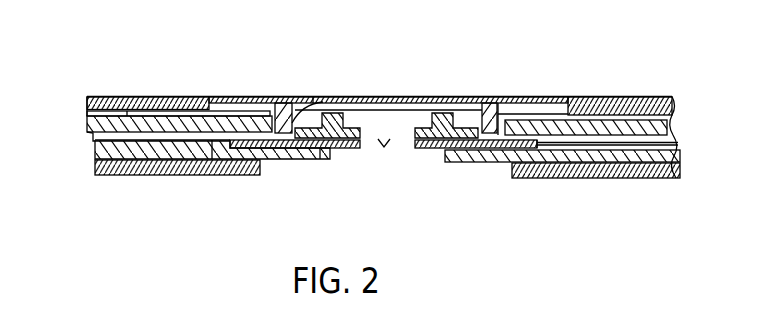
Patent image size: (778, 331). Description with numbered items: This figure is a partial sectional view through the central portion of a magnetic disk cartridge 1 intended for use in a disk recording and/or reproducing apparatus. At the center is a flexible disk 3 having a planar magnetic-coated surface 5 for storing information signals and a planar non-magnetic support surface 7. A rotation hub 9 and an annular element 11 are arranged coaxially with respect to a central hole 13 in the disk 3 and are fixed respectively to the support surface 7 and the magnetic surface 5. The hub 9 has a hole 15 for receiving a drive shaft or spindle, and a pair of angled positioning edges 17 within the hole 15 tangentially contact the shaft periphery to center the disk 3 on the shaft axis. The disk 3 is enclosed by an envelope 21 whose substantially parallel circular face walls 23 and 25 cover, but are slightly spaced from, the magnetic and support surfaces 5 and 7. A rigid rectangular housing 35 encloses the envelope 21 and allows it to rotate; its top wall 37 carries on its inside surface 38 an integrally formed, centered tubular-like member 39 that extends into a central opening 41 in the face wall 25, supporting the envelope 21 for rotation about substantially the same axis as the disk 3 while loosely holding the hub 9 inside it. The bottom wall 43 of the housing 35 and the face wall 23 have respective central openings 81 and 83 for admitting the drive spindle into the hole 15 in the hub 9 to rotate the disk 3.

The magnetic disk cartridge 1 is at (84, 140).
The flexible disk 3 is at (122, 141).
The magnetic-coated surface 5 is at (170, 140).
The non-magnetic support surface 7 is at (212, 159).
The rotation hub 9 is at (332, 77).
The annular element 11 is at (340, 150).
The central hole 13 is at (404, 150).
The hole 15 is at (437, 108).
The angled positioning edges 17 is at (387, 150).
The envelope 21 is at (85, 127).
The face wall 23 is at (322, 162).
The face wall 25 is at (172, 68).
The housing 35 is at (117, 97).
The top wall 37 is at (197, 96).
The inside surface 38 is at (413, 110).
The tubular-like member 39 is at (313, 96).
The central opening 41 is at (272, 97).
The bottom wall 43 is at (252, 178).
The central opening 81 is at (490, 168).
The central opening 83 is at (434, 162).